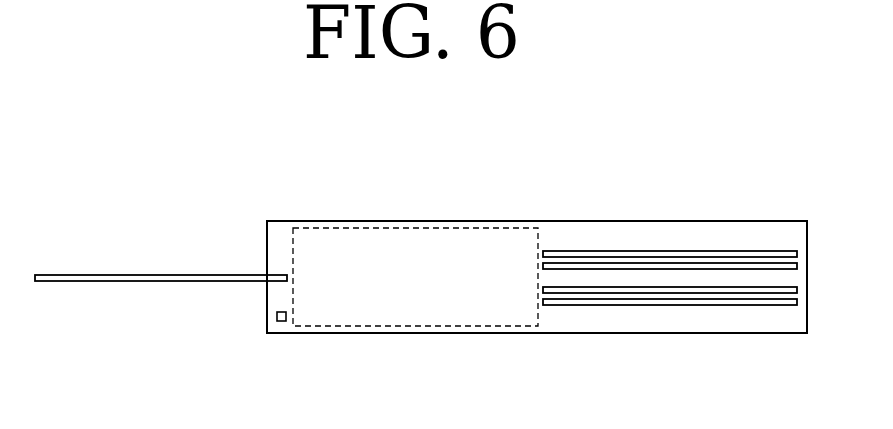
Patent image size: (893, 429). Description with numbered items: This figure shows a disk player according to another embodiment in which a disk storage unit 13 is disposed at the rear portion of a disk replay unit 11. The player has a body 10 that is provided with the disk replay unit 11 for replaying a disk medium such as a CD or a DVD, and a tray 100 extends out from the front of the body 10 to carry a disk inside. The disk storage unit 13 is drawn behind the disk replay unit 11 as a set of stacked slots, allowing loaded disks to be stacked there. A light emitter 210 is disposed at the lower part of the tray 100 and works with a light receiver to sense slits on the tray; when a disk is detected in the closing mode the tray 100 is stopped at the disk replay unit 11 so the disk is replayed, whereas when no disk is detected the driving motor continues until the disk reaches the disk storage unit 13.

The body 10 is at (743, 220).
The disk replay unit 11 is at (415, 327).
The disk storage unit 13 is at (668, 305).
The tray 100 is at (162, 275).
The light emitter 210 is at (277, 316).